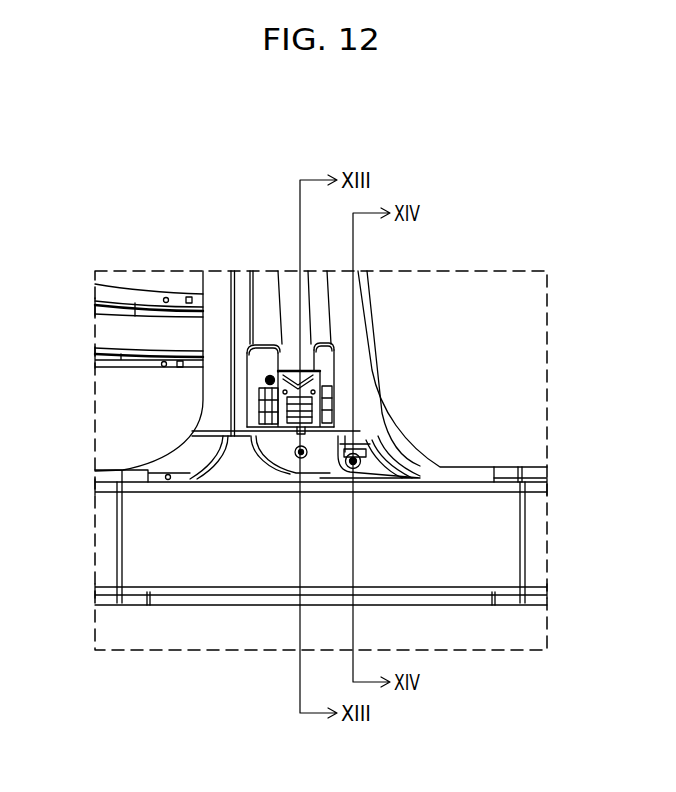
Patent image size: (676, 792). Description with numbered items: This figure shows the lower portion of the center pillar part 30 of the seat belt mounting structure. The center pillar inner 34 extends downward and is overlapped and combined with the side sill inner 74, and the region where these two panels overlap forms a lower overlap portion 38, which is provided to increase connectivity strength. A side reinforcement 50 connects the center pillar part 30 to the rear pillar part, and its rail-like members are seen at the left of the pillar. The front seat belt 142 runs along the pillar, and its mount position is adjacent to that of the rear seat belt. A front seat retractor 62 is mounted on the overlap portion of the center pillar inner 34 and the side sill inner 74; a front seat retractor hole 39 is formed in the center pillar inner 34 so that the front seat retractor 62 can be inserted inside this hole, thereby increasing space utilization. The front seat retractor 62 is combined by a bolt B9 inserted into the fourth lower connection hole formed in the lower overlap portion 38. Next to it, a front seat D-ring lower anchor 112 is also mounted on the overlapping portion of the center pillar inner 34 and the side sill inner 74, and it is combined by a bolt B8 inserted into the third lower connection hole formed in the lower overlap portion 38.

The center pillar part 30 is at (263, 252).
The side reinforcement 50 is at (127, 297).
The front seat belt 142 is at (343, 297).
The center pillar inner 34 is at (367, 313).
The front seat retractor 62 is at (330, 404).
The front seat retractor hole 39 is at (264, 366).
The bolt B9 is at (307, 451).
The front seat D-ring lower anchor 112 is at (363, 452).
The bolt B8 is at (361, 461).
The lower overlap portion 38 is at (557, 413).
The side sill inner 74 is at (478, 568).